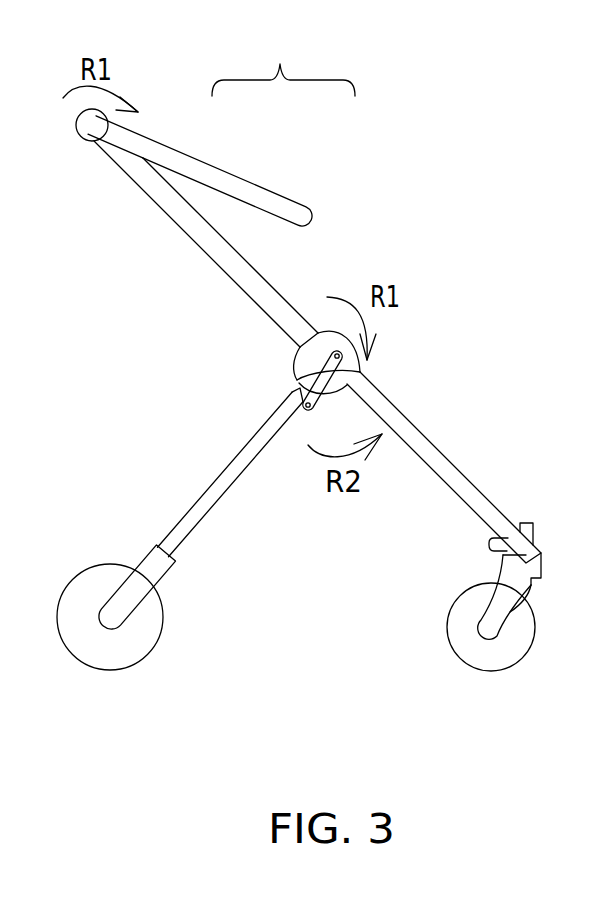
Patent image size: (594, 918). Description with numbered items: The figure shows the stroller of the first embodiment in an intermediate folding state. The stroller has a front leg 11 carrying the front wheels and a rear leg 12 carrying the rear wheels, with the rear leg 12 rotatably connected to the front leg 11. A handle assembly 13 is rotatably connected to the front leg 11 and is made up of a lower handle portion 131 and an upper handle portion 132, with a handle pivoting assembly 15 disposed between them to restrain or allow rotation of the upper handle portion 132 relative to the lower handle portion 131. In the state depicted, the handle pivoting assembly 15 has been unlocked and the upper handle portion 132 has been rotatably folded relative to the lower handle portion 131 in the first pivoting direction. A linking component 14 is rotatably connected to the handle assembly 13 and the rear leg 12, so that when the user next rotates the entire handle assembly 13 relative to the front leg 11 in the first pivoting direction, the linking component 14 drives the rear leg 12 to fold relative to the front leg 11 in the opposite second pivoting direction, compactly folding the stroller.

The front leg 11 is at (427, 455).
The rear leg 12 is at (218, 490).
The handle assembly 13 is at (280, 64).
The lower handle portion 131 is at (291, 291).
The upper handle portion 132 is at (250, 197).
The linking component 14 is at (313, 395).
The handle pivoting assembly 15 is at (88, 128).